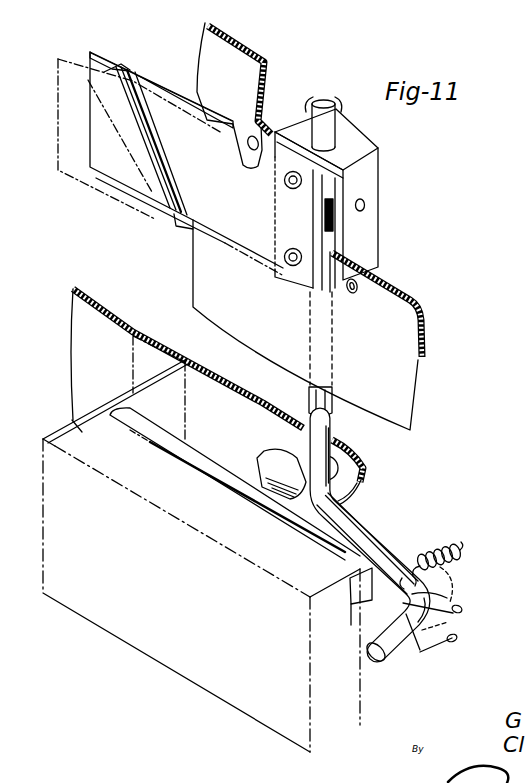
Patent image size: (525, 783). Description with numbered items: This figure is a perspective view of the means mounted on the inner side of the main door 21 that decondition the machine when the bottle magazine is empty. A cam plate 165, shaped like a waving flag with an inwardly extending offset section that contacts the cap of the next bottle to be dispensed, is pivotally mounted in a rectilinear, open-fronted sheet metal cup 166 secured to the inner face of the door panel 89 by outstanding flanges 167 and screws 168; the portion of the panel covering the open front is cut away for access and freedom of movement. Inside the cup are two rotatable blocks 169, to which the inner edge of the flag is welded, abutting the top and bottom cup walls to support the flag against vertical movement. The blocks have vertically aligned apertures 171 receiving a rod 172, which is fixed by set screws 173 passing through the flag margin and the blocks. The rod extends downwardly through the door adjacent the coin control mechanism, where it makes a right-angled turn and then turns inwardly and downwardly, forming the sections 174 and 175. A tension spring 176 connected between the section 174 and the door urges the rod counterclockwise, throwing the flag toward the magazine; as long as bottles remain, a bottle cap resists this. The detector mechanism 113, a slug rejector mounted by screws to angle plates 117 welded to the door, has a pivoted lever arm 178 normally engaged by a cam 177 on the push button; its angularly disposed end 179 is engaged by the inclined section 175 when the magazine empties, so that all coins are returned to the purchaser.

The door 21 is at (93, 297).
The inner panel 89 is at (390, 293).
The detector mechanism 113 is at (75, 424).
The angle plates 117 is at (132, 385).
The cam plate 165 is at (146, 47).
The sheet metal cup 166 is at (375, 162).
The outstanding flanges 167 is at (270, 135).
The screws 168 is at (356, 288).
The rotatable blocks 169 is at (337, 243).
The apertures 171 is at (330, 215).
The rod 172 is at (323, 210).
The set screws 173 is at (282, 181).
The right-angled section 174 is at (363, 540).
The inclined section 175 is at (397, 637).
The tension spring 176 is at (435, 550).
The cam 177 is at (273, 460).
The lever arm 178 is at (372, 592).
The angularly disposed end 179 is at (358, 603).